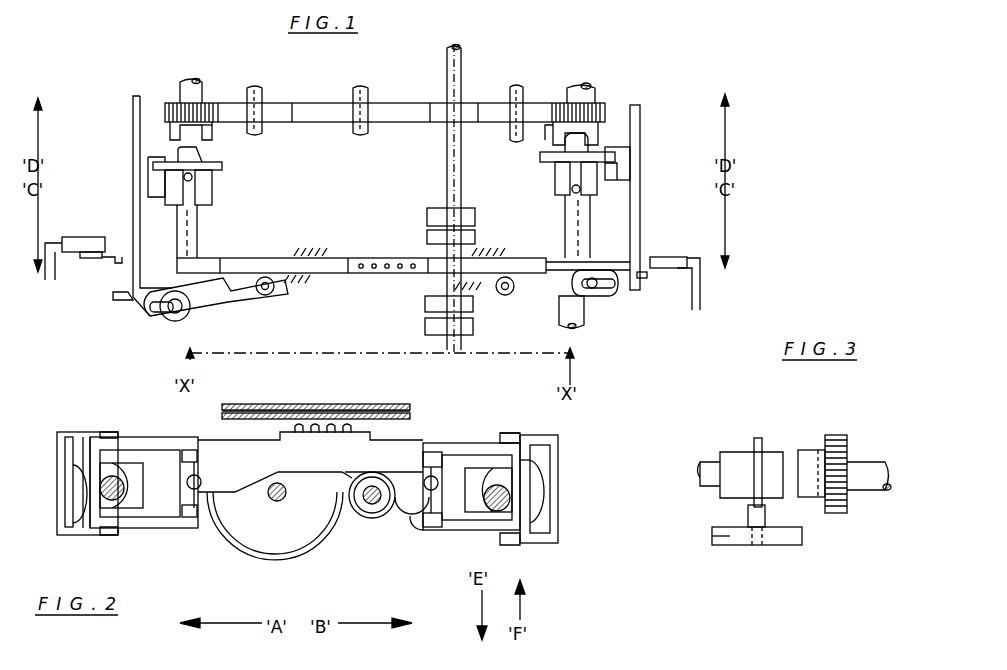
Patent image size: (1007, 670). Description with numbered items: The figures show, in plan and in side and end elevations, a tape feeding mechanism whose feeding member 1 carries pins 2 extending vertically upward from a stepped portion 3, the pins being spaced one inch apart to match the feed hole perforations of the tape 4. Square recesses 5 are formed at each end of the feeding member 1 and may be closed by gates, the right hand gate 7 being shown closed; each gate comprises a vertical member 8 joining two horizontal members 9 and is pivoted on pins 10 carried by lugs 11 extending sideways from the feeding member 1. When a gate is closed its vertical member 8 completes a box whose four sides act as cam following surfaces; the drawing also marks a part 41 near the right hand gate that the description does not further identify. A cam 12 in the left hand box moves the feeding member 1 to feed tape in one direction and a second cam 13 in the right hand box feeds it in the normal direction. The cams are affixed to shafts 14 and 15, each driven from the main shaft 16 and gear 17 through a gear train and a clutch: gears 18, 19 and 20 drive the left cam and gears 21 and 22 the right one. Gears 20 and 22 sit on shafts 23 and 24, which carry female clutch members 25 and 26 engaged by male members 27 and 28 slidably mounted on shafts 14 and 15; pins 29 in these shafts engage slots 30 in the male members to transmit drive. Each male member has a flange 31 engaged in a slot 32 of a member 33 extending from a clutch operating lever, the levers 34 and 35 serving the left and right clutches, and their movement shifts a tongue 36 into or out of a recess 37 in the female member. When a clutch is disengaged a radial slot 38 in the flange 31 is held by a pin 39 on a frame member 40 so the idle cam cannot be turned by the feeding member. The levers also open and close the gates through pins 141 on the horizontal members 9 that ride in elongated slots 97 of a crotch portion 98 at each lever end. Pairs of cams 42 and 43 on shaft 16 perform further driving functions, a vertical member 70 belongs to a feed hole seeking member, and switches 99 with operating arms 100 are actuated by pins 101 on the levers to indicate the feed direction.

In FIG. 1, the feeding member 1 is at (337, 270).
In FIG. 2, the feeding member 1 is at (228, 440).
In FIG. 2, the pins 2 is at (360, 430).
In FIG. 2, the stepped portion 3 is at (280, 440).
In FIG. 2, the tape 4 is at (358, 413).
In FIG. 2, the recesses 5 is at (470, 513).
In FIG. 2, the gate 7 is at (539, 489).
In FIG. 2, the vertical member 8 is at (82, 490).
In FIG. 2, the horizontal members 9 is at (138, 528).
In FIG. 2, the pins 10 is at (306, 487).
In FIG. 2, the lugs 11 is at (182, 453).
In FIG. 2, the cam 12 is at (112, 470).
In FIG. 2, the second cam 13 is at (510, 484).
In FIG. 1, the rotatable shaft 14 is at (200, 232).
In FIG. 1, the rotatable shaft 15 is at (570, 236).
In FIG. 1, the main shaft 16 is at (462, 103).
In FIG. 1, the gear 17 is at (440, 108).
In FIG. 2, the gear 17 is at (362, 516).
In FIG. 1, the gear 18 is at (326, 103).
In FIG. 2, the gear 18 is at (265, 538).
In FIG. 1, the gear 19 is at (280, 103).
In FIG. 1, the gear 20 is at (207, 108).
In FIG. 3, the gear 20 is at (838, 463).
In FIG. 1, the gear 21 is at (528, 103).
In FIG. 1, the gear 22 is at (585, 112).
In FIG. 1, the rotatable shaft 23 is at (186, 92).
In FIG. 3, the rotatable shaft 23 is at (872, 478).
In FIG. 1, the rotatable shaft 24 is at (592, 90).
In FIG. 1, the female member 25 is at (212, 125).
In FIG. 3, the female member 25 is at (812, 455).
In FIG. 1, the female member 26 is at (597, 138).
In FIG. 1, the male member 27 is at (208, 196).
In FIG. 3, the male member 27 is at (733, 482).
In FIG. 1, the male member 28 is at (560, 180).
In FIG. 1, the pins 29 is at (195, 176).
In FIG. 1, the slots 30 is at (176, 200).
In FIG. 1, the flange 31 is at (222, 166).
In FIG. 3, the flange 31 is at (757, 438).
In FIG. 1, the slot 32 is at (160, 170).
In FIG. 1, the member 33 is at (150, 162).
In FIG. 1, the clutch operating lever 34 is at (134, 128).
In FIG. 1, the clutch operating lever 35 is at (636, 128).
In FIG. 1, the tongue 36 is at (196, 152).
In FIG. 1, the recess 37 is at (170, 128).
In FIG. 3, the radial slot 38 is at (765, 510).
In FIG. 3, the pin 39 is at (782, 530).
In FIG. 3, the member 40 is at (730, 540).
In FIG. 2, the side plate 41 is at (522, 440).
In FIG. 1, the cams 42 is at (427, 236).
In FIG. 1, the cams 43 is at (427, 216).
In FIG. 2, the cams 43 is at (62, 530).
In FIG. 2, the vertical member 70 is at (400, 405).
In FIG. 1, the elongated slots 97 is at (155, 314).
In FIG. 1, the crotch portion 98 is at (133, 303).
In FIG. 1, the electric switches 99 is at (100, 240).
In FIG. 1, the operating arms 100 is at (87, 258).
In FIG. 1, the pins 101 is at (120, 300).
In FIG. 1, the pins 141 is at (175, 312).
In FIG. 2, the pins 141 is at (107, 528).